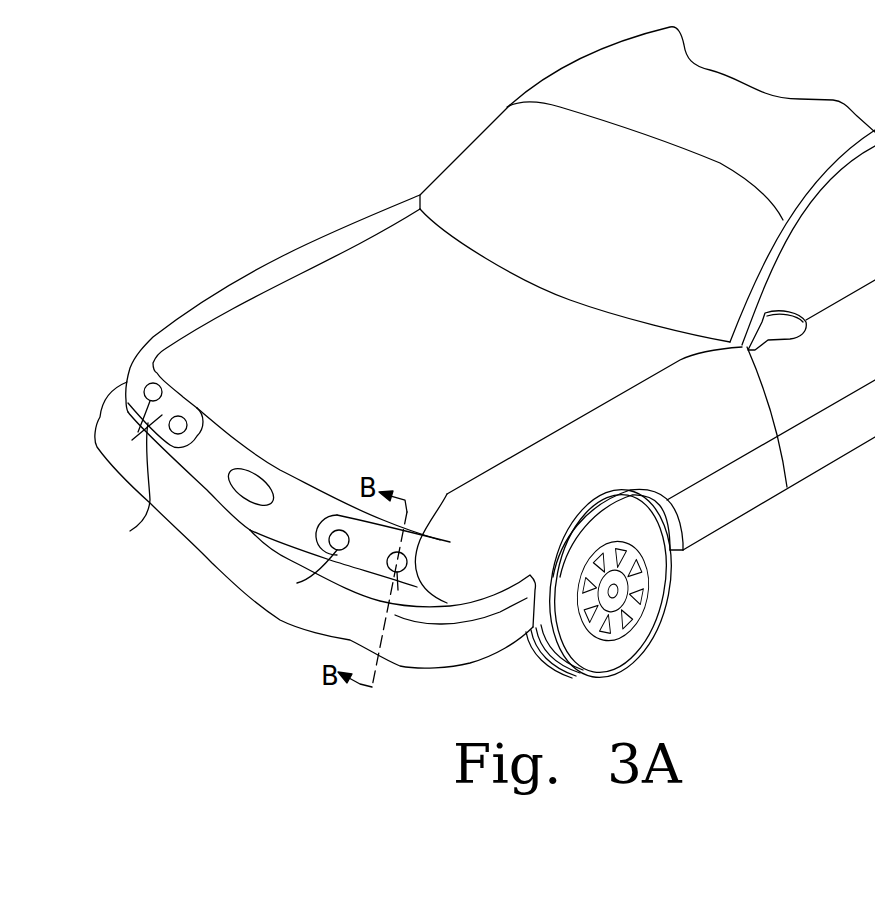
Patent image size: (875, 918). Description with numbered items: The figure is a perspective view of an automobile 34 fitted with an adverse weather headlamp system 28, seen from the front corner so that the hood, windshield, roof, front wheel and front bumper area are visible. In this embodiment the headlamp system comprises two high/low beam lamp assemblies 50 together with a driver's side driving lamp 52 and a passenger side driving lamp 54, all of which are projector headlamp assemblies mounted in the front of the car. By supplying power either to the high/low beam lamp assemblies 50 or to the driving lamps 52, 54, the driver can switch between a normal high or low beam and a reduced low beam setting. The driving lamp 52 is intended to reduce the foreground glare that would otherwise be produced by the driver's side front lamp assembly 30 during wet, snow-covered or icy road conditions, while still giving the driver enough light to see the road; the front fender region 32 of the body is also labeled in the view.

The adverse weather headlamp system 28 is at (288, 462).
The driver's side front lamp assembly 30 is at (362, 558).
The front fender 32 is at (124, 487).
The automobile 34 is at (755, 118).
The high/low beam lamp assemblies 50 is at (178, 434).
The driver's side driving lamp 52 is at (398, 590).
The passenger side driving lamp 54 is at (167, 413).